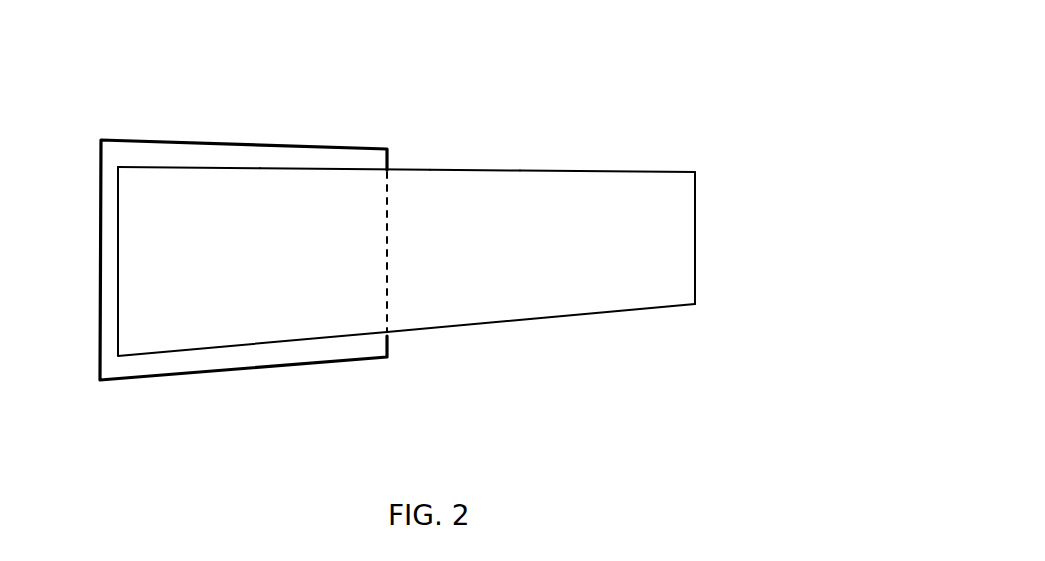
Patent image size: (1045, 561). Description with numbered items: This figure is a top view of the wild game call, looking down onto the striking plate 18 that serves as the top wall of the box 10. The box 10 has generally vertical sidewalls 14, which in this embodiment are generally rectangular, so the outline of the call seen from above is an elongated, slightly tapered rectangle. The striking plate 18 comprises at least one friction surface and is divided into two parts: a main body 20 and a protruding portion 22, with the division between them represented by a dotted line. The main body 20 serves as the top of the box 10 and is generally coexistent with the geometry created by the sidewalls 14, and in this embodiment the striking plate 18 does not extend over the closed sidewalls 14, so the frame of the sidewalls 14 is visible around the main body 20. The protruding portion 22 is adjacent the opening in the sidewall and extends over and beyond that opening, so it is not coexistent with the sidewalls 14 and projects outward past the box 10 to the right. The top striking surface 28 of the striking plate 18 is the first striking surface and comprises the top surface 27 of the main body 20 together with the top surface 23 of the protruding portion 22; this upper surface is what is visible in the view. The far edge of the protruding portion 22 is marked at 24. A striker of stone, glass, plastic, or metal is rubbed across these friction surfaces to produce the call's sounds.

The box 10 is at (168, 152).
The sidewalls 14 is at (261, 151).
The striking plate 18 is at (467, 208).
The main body 20 is at (258, 268).
The protruding portion 22 is at (531, 264).
The top surface of protruding portion 23 is at (563, 217).
The panel edge 24 is at (695, 220).
The top surface of main body 27 is at (238, 207).
The top striking surface 28 is at (298, 195).